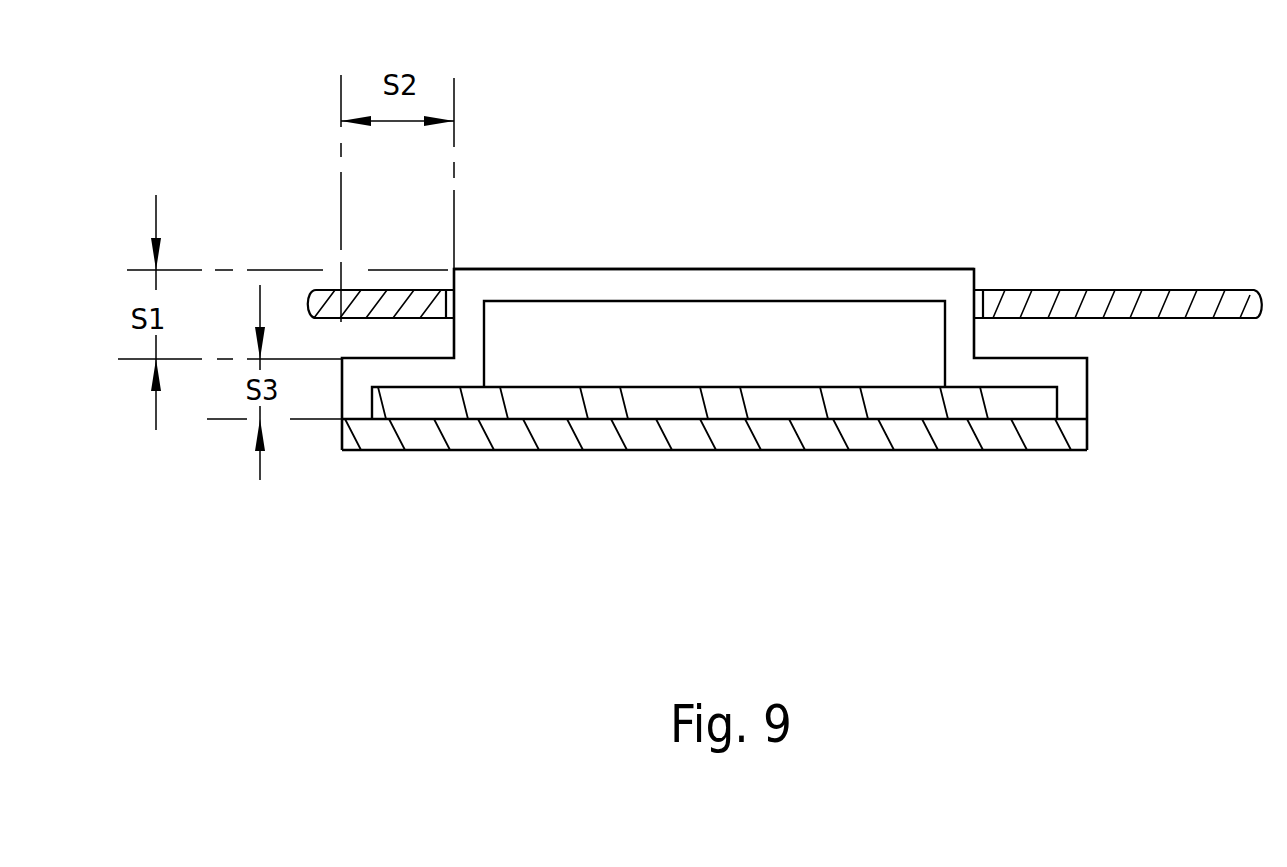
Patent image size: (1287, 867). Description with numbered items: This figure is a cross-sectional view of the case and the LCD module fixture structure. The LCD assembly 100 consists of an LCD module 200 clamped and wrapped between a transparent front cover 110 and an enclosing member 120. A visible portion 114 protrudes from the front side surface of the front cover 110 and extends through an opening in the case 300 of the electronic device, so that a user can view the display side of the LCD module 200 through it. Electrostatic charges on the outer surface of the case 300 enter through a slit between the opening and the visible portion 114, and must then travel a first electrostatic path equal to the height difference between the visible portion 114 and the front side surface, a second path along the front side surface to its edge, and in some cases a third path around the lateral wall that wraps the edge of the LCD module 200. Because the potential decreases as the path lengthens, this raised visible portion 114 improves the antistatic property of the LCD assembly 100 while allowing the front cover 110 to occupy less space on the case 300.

The LCD assembly 100 is at (780, 328).
The front cover 110 is at (714, 294).
The visible portion 114 is at (728, 270).
The enclosing member 120 is at (1102, 433).
The LCD module 200 is at (712, 388).
The case 300 is at (1117, 288).